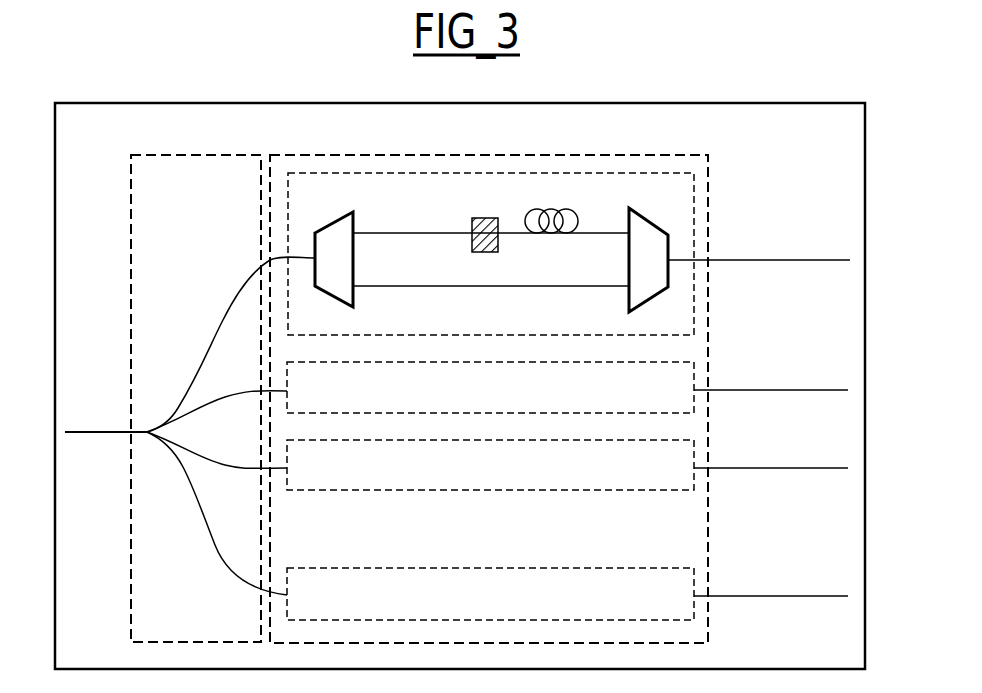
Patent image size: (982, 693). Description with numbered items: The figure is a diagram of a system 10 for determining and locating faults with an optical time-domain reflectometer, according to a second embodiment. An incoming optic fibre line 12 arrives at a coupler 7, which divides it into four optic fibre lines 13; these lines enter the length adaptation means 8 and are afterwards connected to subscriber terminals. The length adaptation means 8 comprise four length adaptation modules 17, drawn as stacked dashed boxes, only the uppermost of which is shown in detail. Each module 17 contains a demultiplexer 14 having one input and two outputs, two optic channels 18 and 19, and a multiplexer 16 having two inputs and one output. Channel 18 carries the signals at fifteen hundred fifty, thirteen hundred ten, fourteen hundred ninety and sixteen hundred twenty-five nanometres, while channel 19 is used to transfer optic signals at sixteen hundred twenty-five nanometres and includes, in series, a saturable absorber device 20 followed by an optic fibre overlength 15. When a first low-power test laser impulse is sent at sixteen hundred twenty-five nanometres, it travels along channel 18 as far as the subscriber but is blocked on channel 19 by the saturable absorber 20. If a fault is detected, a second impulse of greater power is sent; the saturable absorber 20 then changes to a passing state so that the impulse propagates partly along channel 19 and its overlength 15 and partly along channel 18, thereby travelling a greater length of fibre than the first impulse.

The coupler 7 is at (131, 236).
The length adaptation means 8 is at (683, 153).
The system 10 is at (829, 140).
The optic fibre line 12 is at (92, 430).
The optic fibre lines 13 is at (808, 262).
The demultiplexer 14 is at (333, 224).
The optic fibre overlength 15 is at (527, 213).
The multiplexer 16 is at (641, 217).
The length adaptation module 17 is at (681, 194).
The optic channel 18 is at (600, 288).
The optic channel 19 is at (600, 232).
The saturable absorber device 20 is at (478, 218).